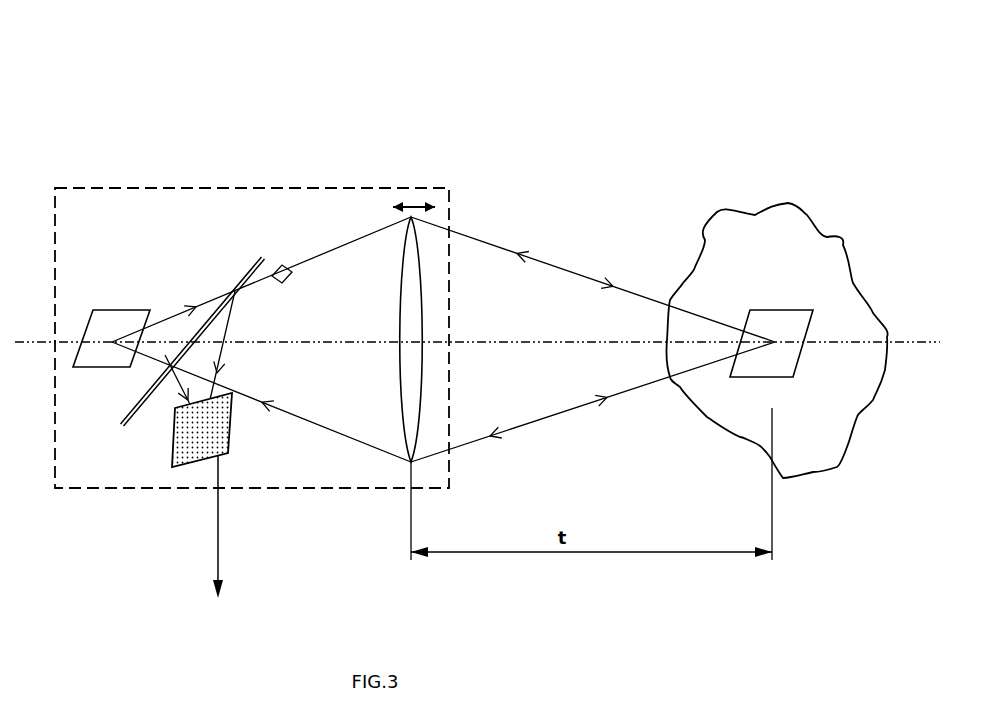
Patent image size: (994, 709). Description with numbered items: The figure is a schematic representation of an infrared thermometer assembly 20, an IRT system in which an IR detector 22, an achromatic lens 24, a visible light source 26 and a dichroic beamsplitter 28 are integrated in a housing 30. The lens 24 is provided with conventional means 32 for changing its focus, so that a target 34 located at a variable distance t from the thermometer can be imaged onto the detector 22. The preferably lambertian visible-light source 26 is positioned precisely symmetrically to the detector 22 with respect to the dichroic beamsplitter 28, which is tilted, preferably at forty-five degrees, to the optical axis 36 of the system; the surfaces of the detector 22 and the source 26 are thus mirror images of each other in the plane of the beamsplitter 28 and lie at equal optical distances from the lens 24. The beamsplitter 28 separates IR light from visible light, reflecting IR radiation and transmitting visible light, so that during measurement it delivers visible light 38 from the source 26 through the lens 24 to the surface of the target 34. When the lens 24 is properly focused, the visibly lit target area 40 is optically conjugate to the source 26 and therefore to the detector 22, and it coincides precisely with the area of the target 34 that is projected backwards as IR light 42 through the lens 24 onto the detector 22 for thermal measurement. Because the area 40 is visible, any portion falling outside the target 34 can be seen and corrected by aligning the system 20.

The IRT assembly 20 is at (491, 105).
The IR detector 22 is at (193, 450).
The achromatic lens 24 is at (415, 232).
The visible light source 26 is at (112, 308).
The dichroic beamsplitter 28 is at (262, 260).
The housing 30 is at (147, 187).
The means for changing focus 32 is at (410, 207).
The target 34 is at (780, 232).
The optical axis 36 is at (538, 342).
The visible light 38 is at (192, 307).
The visibly lit target area 40 is at (785, 363).
The IR light 42 is at (533, 257).